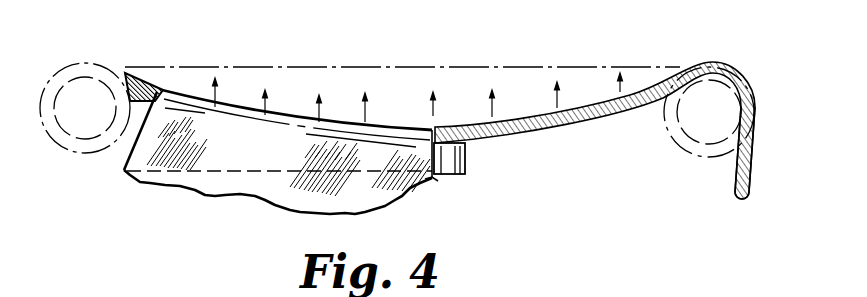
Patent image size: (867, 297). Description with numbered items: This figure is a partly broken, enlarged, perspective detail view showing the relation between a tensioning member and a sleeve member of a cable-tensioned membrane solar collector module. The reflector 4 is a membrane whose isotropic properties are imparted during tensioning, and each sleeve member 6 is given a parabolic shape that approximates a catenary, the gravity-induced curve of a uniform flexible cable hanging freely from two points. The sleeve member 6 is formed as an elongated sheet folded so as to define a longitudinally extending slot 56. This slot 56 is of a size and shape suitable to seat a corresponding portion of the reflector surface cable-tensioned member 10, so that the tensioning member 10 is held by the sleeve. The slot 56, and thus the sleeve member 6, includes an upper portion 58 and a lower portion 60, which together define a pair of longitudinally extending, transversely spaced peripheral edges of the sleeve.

The reflector 4 is at (263, 204).
The sleeve member 6 is at (235, 160).
The reflector surface cable-tensioned member 10 is at (757, 138).
The longitudinally extending slot 56 is at (452, 157).
The upper portion 58 is at (438, 127).
The lower portion 60 is at (430, 178).